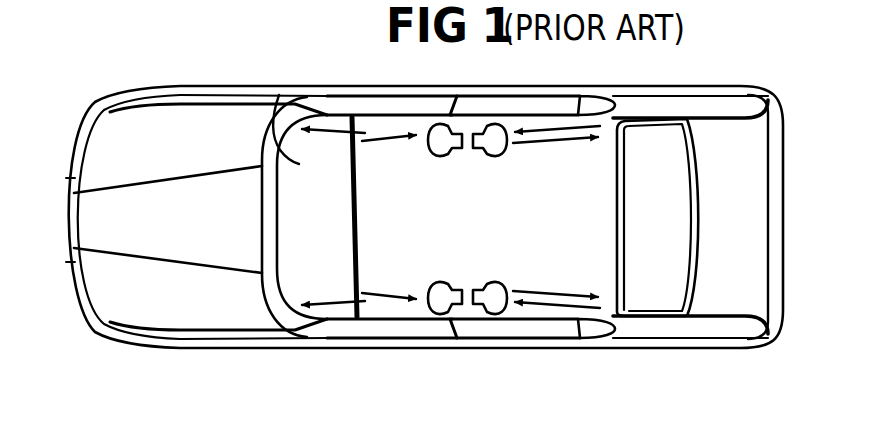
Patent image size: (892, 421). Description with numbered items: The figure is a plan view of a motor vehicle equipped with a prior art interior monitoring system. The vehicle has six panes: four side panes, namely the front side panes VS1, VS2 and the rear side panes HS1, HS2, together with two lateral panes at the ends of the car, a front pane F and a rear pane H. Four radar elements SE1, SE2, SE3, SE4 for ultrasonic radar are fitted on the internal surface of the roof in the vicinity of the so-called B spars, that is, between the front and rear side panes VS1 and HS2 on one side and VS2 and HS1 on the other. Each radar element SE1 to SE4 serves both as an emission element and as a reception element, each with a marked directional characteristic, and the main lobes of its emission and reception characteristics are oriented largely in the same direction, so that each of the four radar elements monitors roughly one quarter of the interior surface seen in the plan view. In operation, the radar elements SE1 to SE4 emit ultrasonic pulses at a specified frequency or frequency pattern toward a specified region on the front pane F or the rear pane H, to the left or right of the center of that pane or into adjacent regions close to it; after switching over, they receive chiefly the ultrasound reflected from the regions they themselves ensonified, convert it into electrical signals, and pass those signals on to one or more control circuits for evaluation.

The front pane F is at (279, 95).
The rear pane H is at (657, 158).
The front side pane VS1 is at (387, 108).
The front side pane VS2 is at (420, 333).
The rear side pane HS1 is at (525, 330).
The rear side pane HS2 is at (507, 105).
The radar element SE1 is at (454, 282).
The radar element SE2 is at (480, 283).
The radar element SE3 is at (446, 157).
The radar element SE4 is at (482, 157).